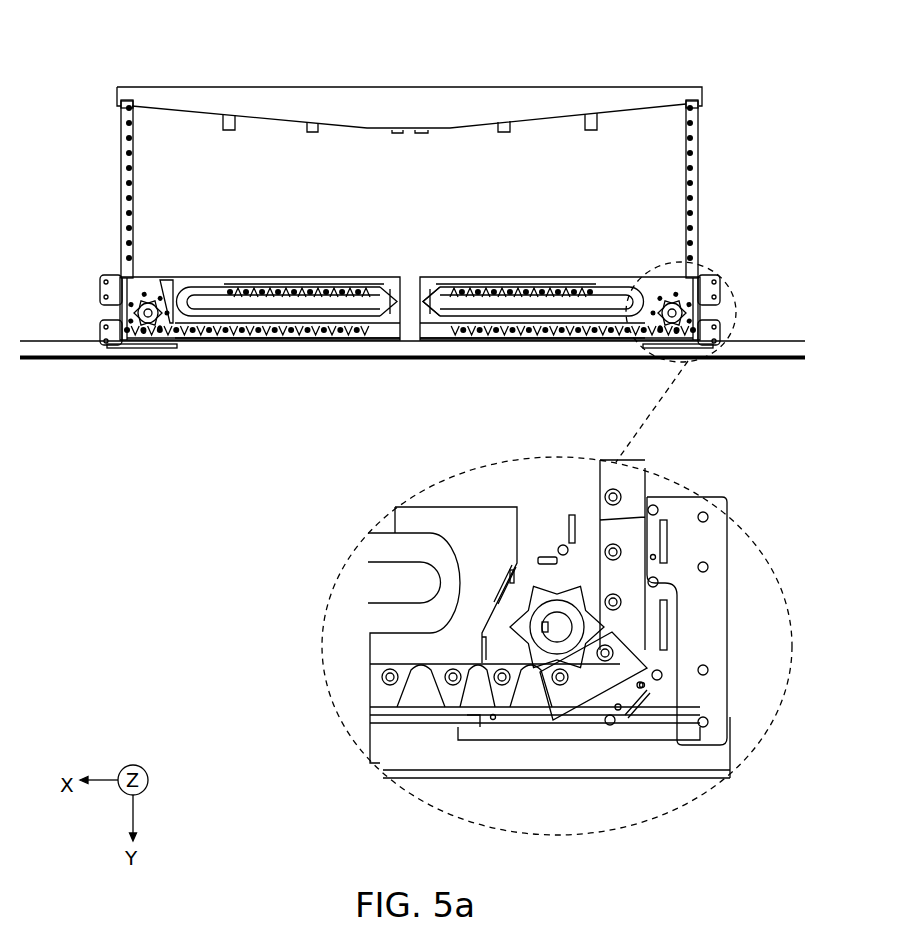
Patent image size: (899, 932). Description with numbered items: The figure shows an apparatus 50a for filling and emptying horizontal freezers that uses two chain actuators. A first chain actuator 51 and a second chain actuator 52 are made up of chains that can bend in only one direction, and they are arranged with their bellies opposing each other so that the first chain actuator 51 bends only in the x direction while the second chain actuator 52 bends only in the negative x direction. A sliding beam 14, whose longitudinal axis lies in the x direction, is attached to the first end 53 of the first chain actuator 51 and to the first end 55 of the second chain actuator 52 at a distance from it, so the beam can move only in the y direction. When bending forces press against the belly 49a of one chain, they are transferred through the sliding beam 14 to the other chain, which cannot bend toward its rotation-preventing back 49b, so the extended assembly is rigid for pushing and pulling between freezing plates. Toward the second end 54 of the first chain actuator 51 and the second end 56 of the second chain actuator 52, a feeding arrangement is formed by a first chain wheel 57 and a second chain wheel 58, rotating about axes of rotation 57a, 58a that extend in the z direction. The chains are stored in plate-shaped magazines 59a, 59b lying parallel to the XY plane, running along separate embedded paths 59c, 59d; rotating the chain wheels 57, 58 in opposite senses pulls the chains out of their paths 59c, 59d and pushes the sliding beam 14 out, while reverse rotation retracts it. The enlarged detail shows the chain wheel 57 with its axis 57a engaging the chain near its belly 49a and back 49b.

The apparatus for emptying and filling horizontal freezers 50a is at (422, 44).
The sliding beam 14 is at (395, 103).
The first end of the second chain actuator 55 is at (118, 106).
The first end of the first chain actuator 53 is at (697, 110).
The second chain actuator 52 is at (116, 192).
The first chain actuator 51 is at (712, 200).
The second end of the second chain actuator 56 is at (238, 290).
The second end of the first chain actuator 54 is at (580, 290).
The first chain magazine 59a is at (425, 290).
The second chain magazine 59b is at (168, 290).
The first embedded path 59c is at (460, 340).
The second embedded path 59d is at (200, 342).
The second chain wheel 58 is at (120, 338).
The axis of rotation of the second chain wheel 58a is at (100, 297).
The belly of the chain 49a is at (600, 483).
The rotation-preventing back of the chain 49b is at (642, 527).
The first chain wheel 57 is at (525, 622).
The axis of rotation of the first chain wheel 57a is at (557, 627).